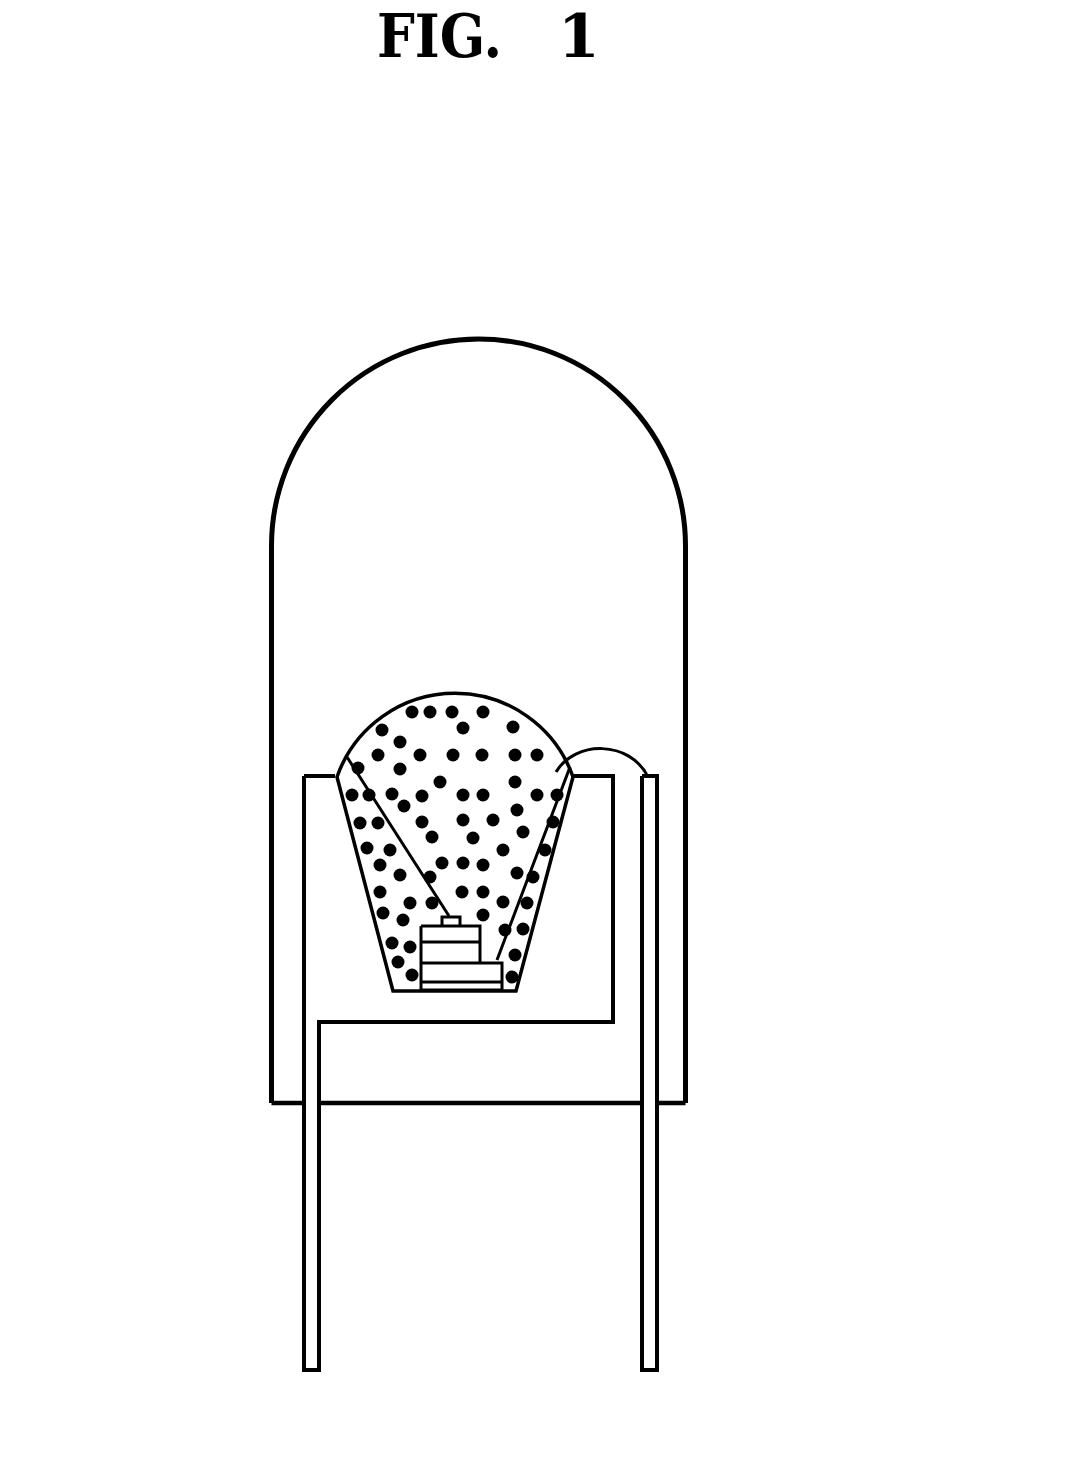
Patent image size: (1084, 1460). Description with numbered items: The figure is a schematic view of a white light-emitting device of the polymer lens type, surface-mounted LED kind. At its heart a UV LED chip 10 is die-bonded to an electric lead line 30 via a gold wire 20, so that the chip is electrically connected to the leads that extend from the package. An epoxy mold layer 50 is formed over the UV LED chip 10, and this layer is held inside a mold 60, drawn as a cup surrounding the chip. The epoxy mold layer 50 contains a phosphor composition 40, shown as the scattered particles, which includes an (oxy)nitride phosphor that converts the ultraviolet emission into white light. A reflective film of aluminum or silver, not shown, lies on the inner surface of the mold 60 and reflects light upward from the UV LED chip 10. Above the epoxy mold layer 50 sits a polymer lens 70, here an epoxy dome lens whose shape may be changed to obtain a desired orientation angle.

The UV LED chip 10 is at (465, 954).
The gold wire 20 is at (638, 759).
The electric lead line 30 is at (643, 1263).
The phosphor composition 40 is at (490, 753).
The epoxy mold layer 50 is at (457, 683).
The mold 60 is at (312, 800).
The polymer lens 70 is at (538, 430).